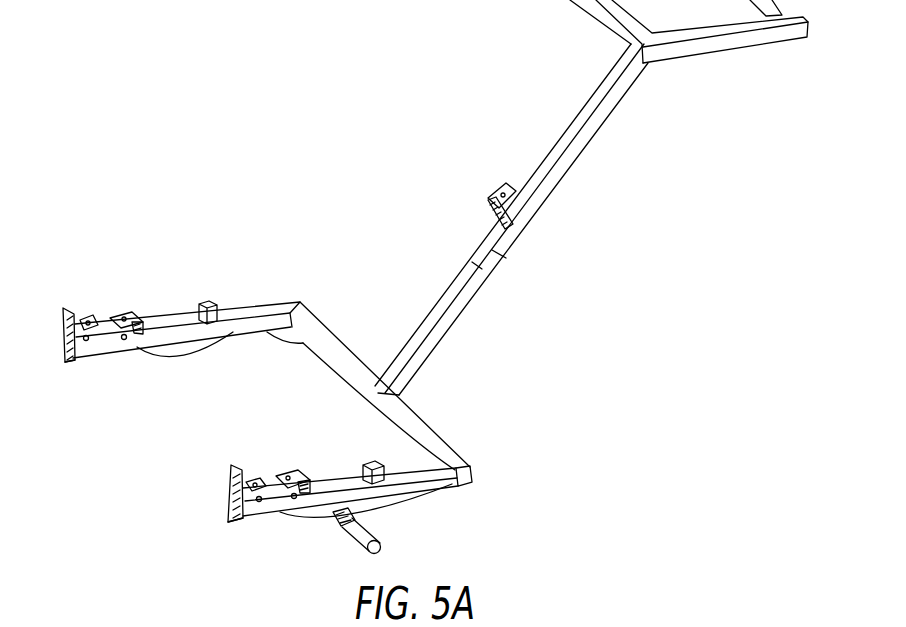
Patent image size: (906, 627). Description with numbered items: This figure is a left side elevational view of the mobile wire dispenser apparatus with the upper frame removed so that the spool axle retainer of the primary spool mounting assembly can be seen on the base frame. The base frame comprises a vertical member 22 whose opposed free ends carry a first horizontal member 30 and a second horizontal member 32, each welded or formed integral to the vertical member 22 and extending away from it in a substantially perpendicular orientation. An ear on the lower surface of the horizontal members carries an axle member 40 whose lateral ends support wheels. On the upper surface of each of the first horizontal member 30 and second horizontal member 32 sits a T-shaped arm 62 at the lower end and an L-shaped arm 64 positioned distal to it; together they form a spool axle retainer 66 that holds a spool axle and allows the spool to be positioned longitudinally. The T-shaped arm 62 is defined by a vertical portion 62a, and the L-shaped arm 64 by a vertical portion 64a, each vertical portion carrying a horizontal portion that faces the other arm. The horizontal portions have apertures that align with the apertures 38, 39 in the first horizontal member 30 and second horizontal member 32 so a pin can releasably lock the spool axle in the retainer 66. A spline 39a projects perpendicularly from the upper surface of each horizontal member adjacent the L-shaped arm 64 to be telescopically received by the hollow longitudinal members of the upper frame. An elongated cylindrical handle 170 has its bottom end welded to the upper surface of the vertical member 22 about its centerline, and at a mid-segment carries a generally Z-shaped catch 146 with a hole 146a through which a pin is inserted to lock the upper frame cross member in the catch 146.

The vertical member 22 is at (421, 421).
The first horizontal member 30 is at (446, 481).
The second horizontal member 32 is at (272, 306).
The aperture 38 is at (95, 341).
The aperture 39 is at (126, 340).
The spline 39a is at (206, 301).
The axle member 40 is at (381, 538).
The T-shaped arm 62 is at (70, 312).
The vertical portion 62a is at (66, 345).
The L-shaped arm 64 is at (118, 316).
The vertical portion 64a is at (142, 326).
The spool axle retainer 66 is at (96, 322).
The Z-shaped catch 146 is at (505, 184).
The hole 146a is at (498, 192).
The elongated cylindrical handle 170 is at (532, 219).